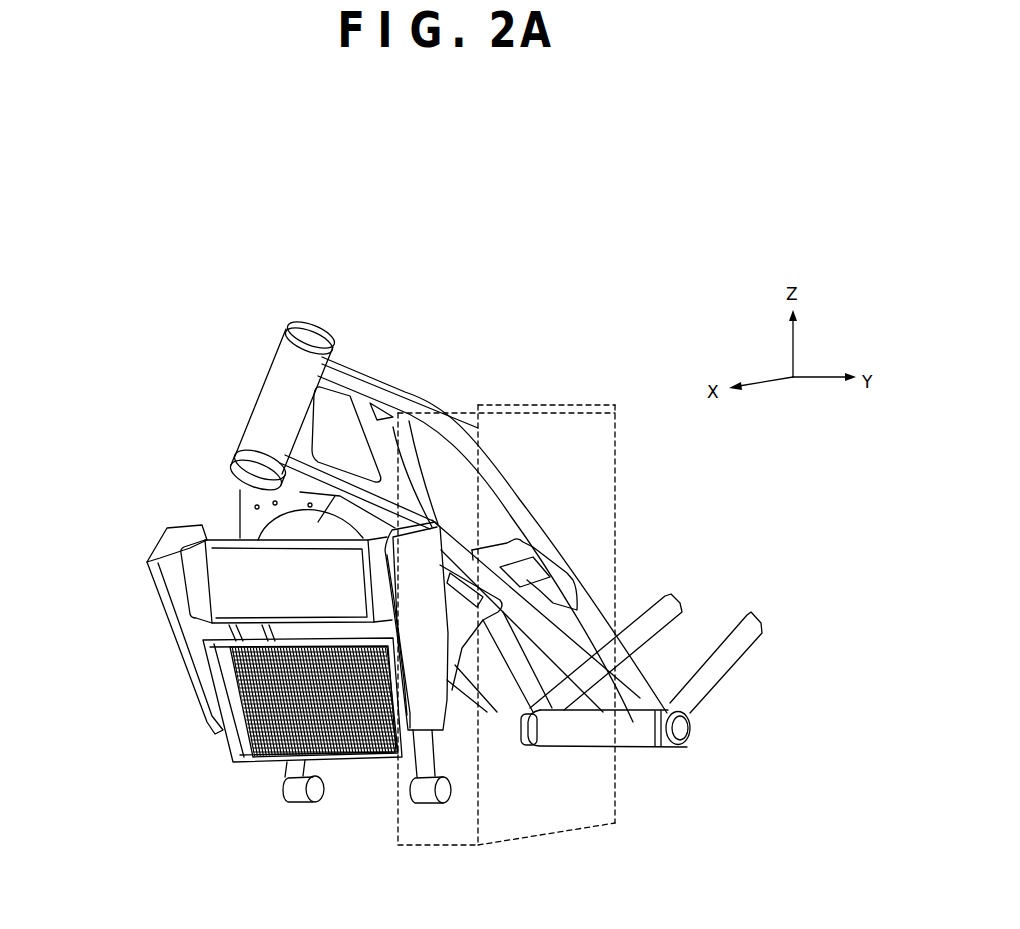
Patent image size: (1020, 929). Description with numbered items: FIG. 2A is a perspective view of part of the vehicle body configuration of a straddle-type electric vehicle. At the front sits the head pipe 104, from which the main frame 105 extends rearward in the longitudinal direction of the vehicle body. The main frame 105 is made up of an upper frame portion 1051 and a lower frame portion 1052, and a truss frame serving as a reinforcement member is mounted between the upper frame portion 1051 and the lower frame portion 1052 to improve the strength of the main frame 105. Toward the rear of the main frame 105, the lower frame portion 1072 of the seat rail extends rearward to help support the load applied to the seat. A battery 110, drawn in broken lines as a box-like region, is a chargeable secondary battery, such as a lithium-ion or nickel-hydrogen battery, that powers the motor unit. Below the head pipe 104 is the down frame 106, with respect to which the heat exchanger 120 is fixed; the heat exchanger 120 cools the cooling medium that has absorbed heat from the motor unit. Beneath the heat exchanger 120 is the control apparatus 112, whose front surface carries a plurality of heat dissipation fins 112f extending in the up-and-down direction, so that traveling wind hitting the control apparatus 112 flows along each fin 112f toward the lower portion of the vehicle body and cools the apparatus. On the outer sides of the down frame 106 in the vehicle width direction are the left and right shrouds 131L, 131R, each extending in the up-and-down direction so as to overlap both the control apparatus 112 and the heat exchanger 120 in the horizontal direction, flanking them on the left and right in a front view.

The head pipe 104 is at (266, 383).
The main frame 105 is at (485, 501).
The upper frame portion 1051 is at (383, 373).
The lower frame portion 1052 is at (440, 523).
The down frame 106 is at (240, 512).
The battery 110 is at (615, 499).
The heat exchanger 120 is at (223, 588).
The control apparatus 112 is at (276, 750).
The heat dissipation fin 112f is at (362, 740).
The right shroud 131R is at (195, 690).
The left shroud 131L is at (440, 700).
The lower frame portion 1072 is at (723, 670).